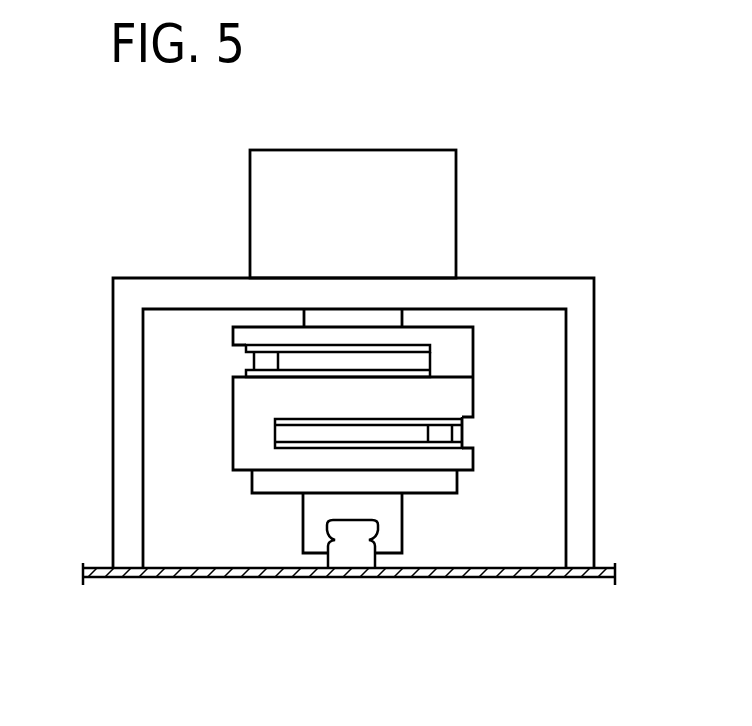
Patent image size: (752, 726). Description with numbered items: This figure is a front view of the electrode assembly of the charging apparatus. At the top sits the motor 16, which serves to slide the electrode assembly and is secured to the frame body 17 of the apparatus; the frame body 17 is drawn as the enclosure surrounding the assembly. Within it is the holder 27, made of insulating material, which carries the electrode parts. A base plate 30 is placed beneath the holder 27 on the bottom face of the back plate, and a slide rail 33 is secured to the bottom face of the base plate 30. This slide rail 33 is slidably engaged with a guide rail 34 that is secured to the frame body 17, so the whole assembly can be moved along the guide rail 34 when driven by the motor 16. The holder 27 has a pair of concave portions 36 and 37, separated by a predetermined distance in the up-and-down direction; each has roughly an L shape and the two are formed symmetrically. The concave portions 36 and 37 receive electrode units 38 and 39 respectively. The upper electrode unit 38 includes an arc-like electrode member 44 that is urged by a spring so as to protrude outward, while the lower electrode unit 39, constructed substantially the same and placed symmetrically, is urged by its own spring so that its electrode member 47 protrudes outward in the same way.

The motor 16 is at (423, 163).
The frame body 17 is at (515, 290).
The holder 27 is at (250, 410).
The base plate 30 is at (280, 485).
The slide rail 33 is at (392, 520).
The guide rail 34 is at (352, 553).
The concave portion 36 is at (238, 360).
The concave portion 37 is at (473, 440).
The electrode unit 38 is at (285, 359).
The electrode unit 39 is at (458, 437).
The electrode member 44 is at (405, 363).
The electrode member 47 is at (270, 437).